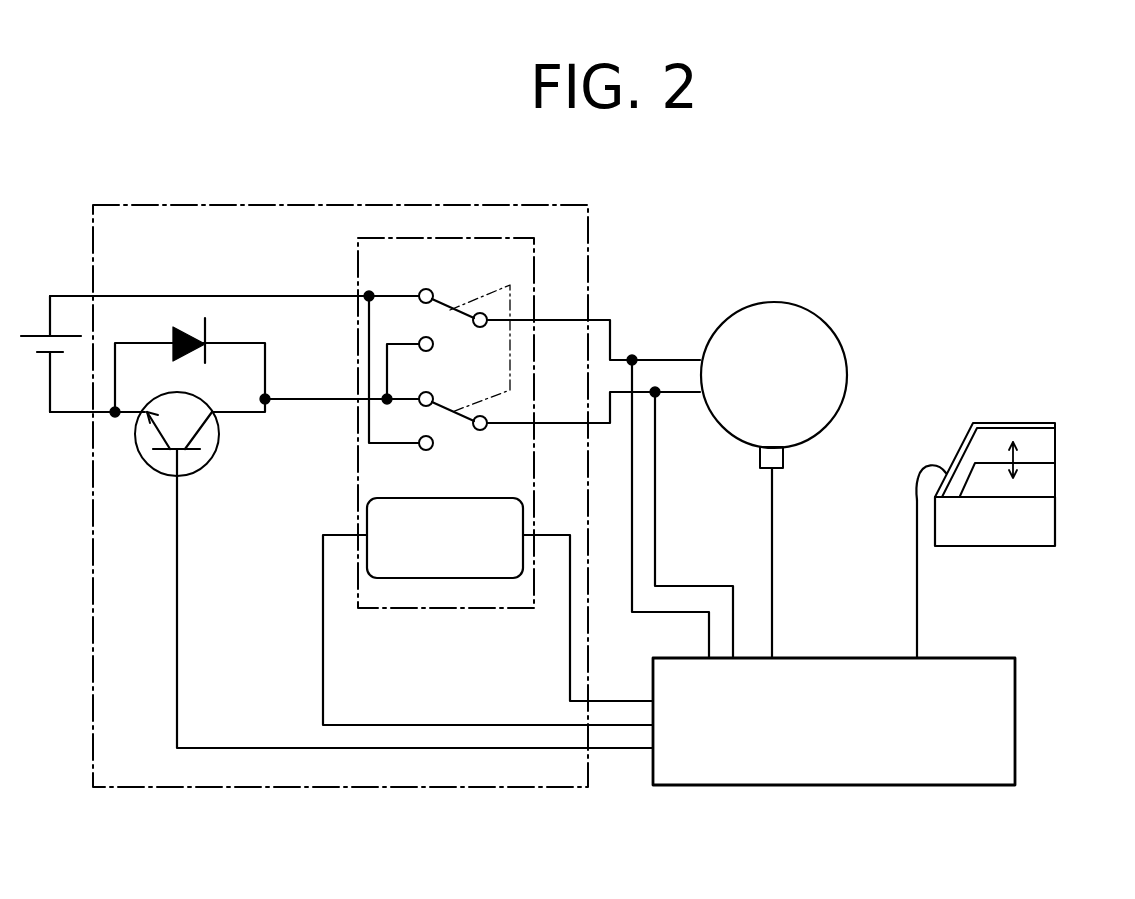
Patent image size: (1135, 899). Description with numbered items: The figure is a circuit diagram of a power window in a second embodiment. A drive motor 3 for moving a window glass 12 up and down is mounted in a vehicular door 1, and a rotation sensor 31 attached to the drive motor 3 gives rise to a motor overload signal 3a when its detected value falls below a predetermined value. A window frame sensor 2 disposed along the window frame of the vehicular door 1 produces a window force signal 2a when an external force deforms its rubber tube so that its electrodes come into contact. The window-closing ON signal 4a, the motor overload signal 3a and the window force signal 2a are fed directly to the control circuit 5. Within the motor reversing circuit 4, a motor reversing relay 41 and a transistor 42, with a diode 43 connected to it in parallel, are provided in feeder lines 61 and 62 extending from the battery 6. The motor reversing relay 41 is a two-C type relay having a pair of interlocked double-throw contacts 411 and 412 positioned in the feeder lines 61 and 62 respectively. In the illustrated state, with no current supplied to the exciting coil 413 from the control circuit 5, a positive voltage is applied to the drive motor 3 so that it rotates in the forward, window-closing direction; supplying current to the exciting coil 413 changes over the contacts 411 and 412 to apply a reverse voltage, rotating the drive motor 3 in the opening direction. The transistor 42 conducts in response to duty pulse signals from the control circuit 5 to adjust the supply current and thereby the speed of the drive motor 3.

The vehicular door 1 is at (1048, 520).
The window glass 12 is at (1048, 478).
The window frame sensor 2 is at (962, 440).
The window force signal 2a is at (917, 608).
The drive motor 3 is at (786, 303).
The rotation sensor 31 is at (785, 458).
The motor overload signal 3a is at (772, 608).
The motor reversing circuit 4 is at (536, 205).
The window-closing ON signal 4a is at (632, 536).
The motor reversing relay 41 is at (358, 255).
The double-throw contact 411 is at (447, 307).
The double-throw contact 412 is at (442, 418).
The exciting coil 413 is at (466, 579).
The transistor 42 is at (200, 462).
The diode 43 is at (174, 330).
The control circuit 5 is at (1017, 683).
The battery 6 is at (40, 333).
The feeder line 61 is at (241, 296).
The feeder line 62 is at (311, 400).